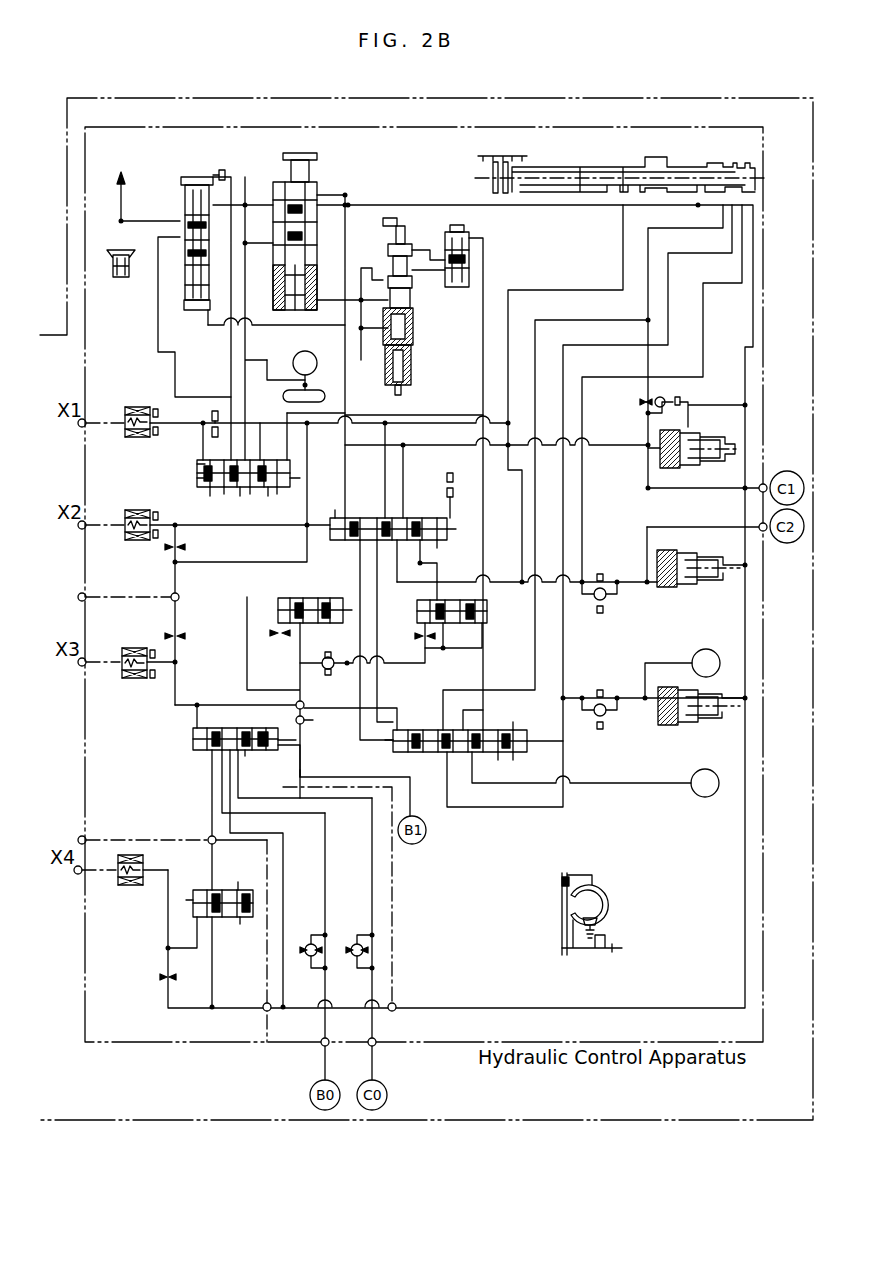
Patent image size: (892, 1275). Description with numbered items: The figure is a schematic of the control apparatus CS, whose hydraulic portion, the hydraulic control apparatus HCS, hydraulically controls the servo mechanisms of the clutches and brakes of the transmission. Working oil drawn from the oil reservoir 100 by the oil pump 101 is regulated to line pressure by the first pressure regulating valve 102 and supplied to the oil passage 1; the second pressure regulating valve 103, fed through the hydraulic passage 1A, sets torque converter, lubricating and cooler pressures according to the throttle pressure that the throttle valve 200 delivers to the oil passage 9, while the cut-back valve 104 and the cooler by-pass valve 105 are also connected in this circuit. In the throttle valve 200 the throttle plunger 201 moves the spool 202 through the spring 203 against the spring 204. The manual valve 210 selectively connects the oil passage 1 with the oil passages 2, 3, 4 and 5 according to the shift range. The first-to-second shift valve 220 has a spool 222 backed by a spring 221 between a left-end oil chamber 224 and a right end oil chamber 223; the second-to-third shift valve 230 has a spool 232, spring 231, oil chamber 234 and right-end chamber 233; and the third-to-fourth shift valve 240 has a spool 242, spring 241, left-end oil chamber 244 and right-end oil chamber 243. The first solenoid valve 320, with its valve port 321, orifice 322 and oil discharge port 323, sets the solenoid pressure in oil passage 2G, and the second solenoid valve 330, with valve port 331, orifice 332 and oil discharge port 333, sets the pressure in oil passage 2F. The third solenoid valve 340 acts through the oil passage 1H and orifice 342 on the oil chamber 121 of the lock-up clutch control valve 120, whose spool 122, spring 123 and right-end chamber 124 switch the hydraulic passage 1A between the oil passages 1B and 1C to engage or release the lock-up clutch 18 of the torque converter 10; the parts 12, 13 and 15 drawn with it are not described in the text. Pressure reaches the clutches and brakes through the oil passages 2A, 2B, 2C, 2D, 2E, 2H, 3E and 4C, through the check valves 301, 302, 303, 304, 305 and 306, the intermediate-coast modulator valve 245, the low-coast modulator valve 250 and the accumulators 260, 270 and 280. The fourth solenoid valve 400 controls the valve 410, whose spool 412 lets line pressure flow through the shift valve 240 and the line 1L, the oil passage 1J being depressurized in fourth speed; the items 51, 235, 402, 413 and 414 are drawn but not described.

The oil passage 1 is at (572, 207).
The oil passage 2 is at (675, 228).
The oil passage 3 is at (697, 253).
The oil passage 4 is at (718, 283).
The oil passage 5 is at (547, 290).
The oil passage 9 is at (361, 360).
The torque converter 10 is at (605, 873).
The brake band 12 is at (608, 894).
The brake cylinder rod 13 is at (562, 910).
The brake piston 15 is at (600, 924).
The lock-up clutch 18 is at (560, 881).
The solenoid 51 is at (219, 171).
The oil reservoir 100 is at (325, 396).
The oil pump 101 is at (316, 357).
The first pressure regulating valve 102 is at (315, 308).
The second pressure regulating valve 103 is at (205, 312).
The cut-back valve 104 is at (464, 234).
The cooler by-pass valve 105 is at (121, 277).
The lock-up clutch control valve 120 is at (206, 490).
The oil chamber 121 is at (197, 478).
The spool 122 is at (277, 490).
The spring 123 is at (197, 466).
The right-end chamber 124 is at (300, 478).
The throttle valve 200 is at (411, 355).
The throttle plunger 201 is at (403, 380).
The spool 202 is at (412, 300).
The spring 203 is at (413, 325).
The spring 204 is at (400, 240).
The manual valve 210 is at (705, 168).
The 1-2 shift valve 220 is at (395, 752).
The spring 221 is at (512, 736).
The spool 222 is at (493, 753).
The right end oil chamber 223 is at (530, 748).
The left-end oil chamber 224 is at (393, 741).
The 2-3 shift valve 230 is at (337, 540).
The spring 231 is at (448, 532).
The spool 232 is at (410, 518).
The right-end chamber 233 is at (443, 540).
The oil chamber 234 is at (335, 512).
The solenoid 235 is at (447, 478).
The 3-4 shift valve 240 is at (193, 745).
The spring 241 is at (300, 736).
The spool 242 is at (246, 754).
The right-end oil chamber 243 is at (300, 770).
The left-end oil chamber 244 is at (196, 738).
The intermediate-coast modulator valve 245 is at (315, 623).
The low-coast modulator valve 250 is at (455, 624).
The accumulator 260 is at (696, 440).
The accumulator 270 is at (665, 550).
The accumulator 280 is at (690, 690).
The check valve 301 is at (355, 940).
The check valve 302 is at (672, 401).
The check valve 303 is at (598, 601).
The check valve 304 is at (309, 940).
The check valve 305 is at (330, 670).
The check valve 306 is at (598, 717).
The first solenoid valve 320 is at (130, 541).
The valve port 321 is at (162, 507).
The orifice 322 is at (185, 562).
The oil discharge port 323 is at (155, 540).
The second solenoid valve 330 is at (135, 680).
The valve port 331 is at (158, 653).
The orifice 332 is at (183, 636).
The oil discharge port 333 is at (160, 636).
The third solenoid valve 340 is at (130, 437).
The orifice 342 is at (211, 415).
The fourth solenoid valve 400 is at (122, 888).
The orifice 402 is at (160, 981).
The valve 410 is at (200, 892).
The spool 412 is at (238, 890).
The port 413 is at (240, 920).
The port 414 is at (190, 905).
The hydraulic passage 1A is at (232, 186).
The oil passage 1B is at (250, 494).
The oil passage 1C is at (224, 494).
The oil passage 1H is at (203, 427).
The oil passage 1J is at (372, 843).
The oil passage 1L is at (325, 884).
The oil passage 2A is at (292, 470).
The oil passage 2B is at (366, 616).
The oil passage 2C is at (449, 582).
The oil passage 2D is at (630, 580).
The oil passage 2E is at (640, 443).
The oil passage 2F is at (176, 682).
The oil passage 2G is at (228, 528).
The oil passage 2H is at (630, 698).
The oil passage 3E is at (300, 688).
The oil passage 4C is at (609, 783).
The hydraulic control apparatus HCS is at (127, 1043).
The control apparatus CS is at (208, 1122).